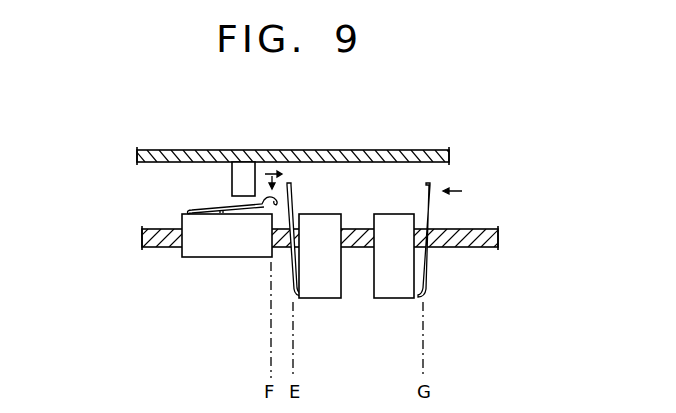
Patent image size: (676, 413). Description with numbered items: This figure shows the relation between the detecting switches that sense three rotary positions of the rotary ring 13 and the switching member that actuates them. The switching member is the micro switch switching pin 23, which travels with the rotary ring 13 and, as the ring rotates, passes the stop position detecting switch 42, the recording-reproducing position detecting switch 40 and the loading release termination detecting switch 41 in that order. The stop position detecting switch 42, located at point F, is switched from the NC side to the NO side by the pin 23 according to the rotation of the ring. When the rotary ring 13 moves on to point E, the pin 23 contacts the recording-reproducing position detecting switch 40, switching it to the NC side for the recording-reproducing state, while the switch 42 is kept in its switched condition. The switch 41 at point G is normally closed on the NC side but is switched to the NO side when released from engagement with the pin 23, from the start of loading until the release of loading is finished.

The rotary ring 13 is at (372, 150).
The micro switch switching pin 23 is at (232, 183).
The recording-reproducing position detecting switch 40 is at (318, 299).
The loading release termination detecting switch 41 is at (389, 299).
The stop position detecting switch 42 is at (218, 257).